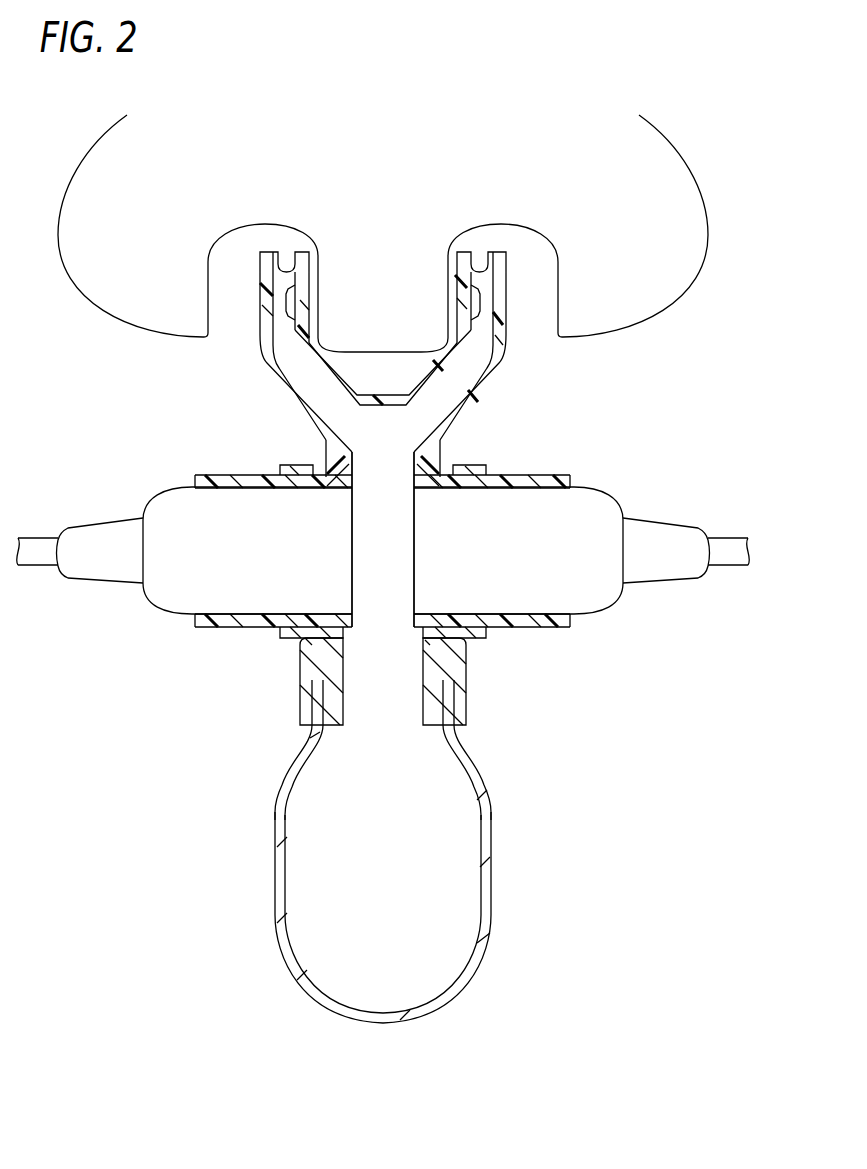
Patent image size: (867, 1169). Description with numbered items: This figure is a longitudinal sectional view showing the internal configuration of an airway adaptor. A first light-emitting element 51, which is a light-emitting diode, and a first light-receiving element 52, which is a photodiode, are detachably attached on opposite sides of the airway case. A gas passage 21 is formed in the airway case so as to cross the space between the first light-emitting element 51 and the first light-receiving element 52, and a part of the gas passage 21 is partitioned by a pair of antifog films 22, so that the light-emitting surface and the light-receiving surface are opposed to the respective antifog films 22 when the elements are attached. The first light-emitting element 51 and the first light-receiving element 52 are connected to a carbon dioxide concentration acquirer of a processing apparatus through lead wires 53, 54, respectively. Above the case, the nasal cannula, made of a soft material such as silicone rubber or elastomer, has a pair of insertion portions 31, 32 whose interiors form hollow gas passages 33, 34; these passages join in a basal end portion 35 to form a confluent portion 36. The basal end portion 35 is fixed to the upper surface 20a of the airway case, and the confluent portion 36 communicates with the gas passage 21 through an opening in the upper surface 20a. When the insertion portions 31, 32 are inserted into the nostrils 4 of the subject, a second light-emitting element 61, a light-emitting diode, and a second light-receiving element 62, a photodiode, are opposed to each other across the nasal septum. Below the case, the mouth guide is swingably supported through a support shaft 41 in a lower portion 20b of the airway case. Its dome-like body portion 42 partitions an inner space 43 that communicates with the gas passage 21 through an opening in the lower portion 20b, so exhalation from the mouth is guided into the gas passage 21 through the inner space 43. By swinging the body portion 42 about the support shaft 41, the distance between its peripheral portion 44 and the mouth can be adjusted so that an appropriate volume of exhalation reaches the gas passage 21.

The nostrils 4 is at (227, 333).
The second light-emitting element 61 is at (478, 300).
The second light-receiving element 62 is at (288, 300).
The hollow gas passage 34 is at (282, 345).
The hollow gas passage 33 is at (484, 345).
The insertion portion 32 is at (286, 385).
The insertion portion 31 is at (480, 385).
The confluent portion 36 is at (382, 424).
The basal end portion 35 is at (443, 444).
The upper surface 20a is at (485, 463).
The lower portion 20b is at (313, 692).
The antifog films 22 is at (352, 519).
The gas passage 21 is at (398, 570).
The first light-receiving element 52 is at (165, 512).
The first light-emitting element 51 is at (601, 512).
The lead wire 54 is at (38, 553).
The lead wire 53 is at (728, 553).
The support shaft 41 is at (310, 661).
The body portion 42 is at (510, 807).
The inner space 43 is at (410, 892).
The peripheral portion 44 is at (480, 965).